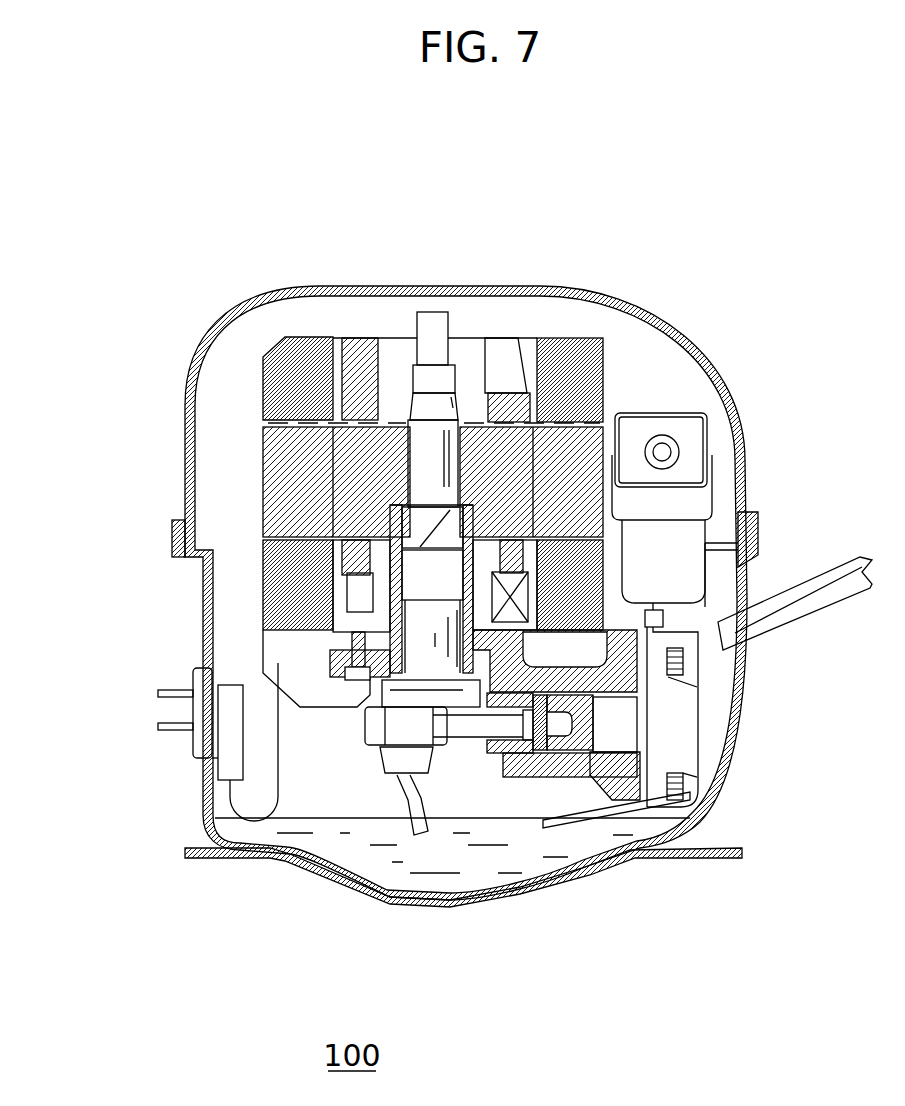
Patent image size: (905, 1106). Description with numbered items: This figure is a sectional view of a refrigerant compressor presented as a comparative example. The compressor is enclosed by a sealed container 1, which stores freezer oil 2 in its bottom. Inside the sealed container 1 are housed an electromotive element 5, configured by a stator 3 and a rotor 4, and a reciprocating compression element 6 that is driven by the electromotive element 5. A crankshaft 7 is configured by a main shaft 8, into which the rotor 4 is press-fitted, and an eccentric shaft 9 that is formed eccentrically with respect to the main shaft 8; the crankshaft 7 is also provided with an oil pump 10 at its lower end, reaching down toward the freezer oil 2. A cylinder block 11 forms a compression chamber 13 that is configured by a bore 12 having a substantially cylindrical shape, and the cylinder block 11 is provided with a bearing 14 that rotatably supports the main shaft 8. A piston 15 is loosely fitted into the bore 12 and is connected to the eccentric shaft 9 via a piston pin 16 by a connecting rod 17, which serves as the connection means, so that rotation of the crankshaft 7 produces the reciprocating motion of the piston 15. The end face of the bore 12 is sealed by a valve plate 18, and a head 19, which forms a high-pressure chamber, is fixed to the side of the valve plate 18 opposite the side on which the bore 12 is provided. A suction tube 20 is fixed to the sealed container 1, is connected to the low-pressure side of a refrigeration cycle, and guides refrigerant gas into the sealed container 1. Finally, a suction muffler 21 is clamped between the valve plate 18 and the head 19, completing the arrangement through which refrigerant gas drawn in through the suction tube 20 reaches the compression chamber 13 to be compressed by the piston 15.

The sealed container 1 is at (697, 352).
The freezer oil 2 is at (463, 857).
The stator 3 is at (285, 362).
The rotor 4 is at (360, 343).
The electromotive element 5 is at (518, 455).
The reciprocating compression element 6 is at (628, 760).
The crankshaft 7 is at (428, 332).
The main shaft 8 is at (430, 623).
The eccentric shaft 9 is at (405, 722).
The oil pump 10 is at (417, 832).
The cylinder block 11 is at (585, 765).
The bore 12 is at (633, 765).
The compression chamber 13 is at (612, 728).
The bearing 14 is at (385, 642).
The piston 15 is at (573, 755).
The piston pin 16 is at (541, 755).
The connecting rod 17 is at (380, 735).
The valve plate 18 is at (645, 668).
The head 19 is at (677, 702).
The suction tube 20 is at (820, 592).
The suction muffler 21 is at (680, 563).